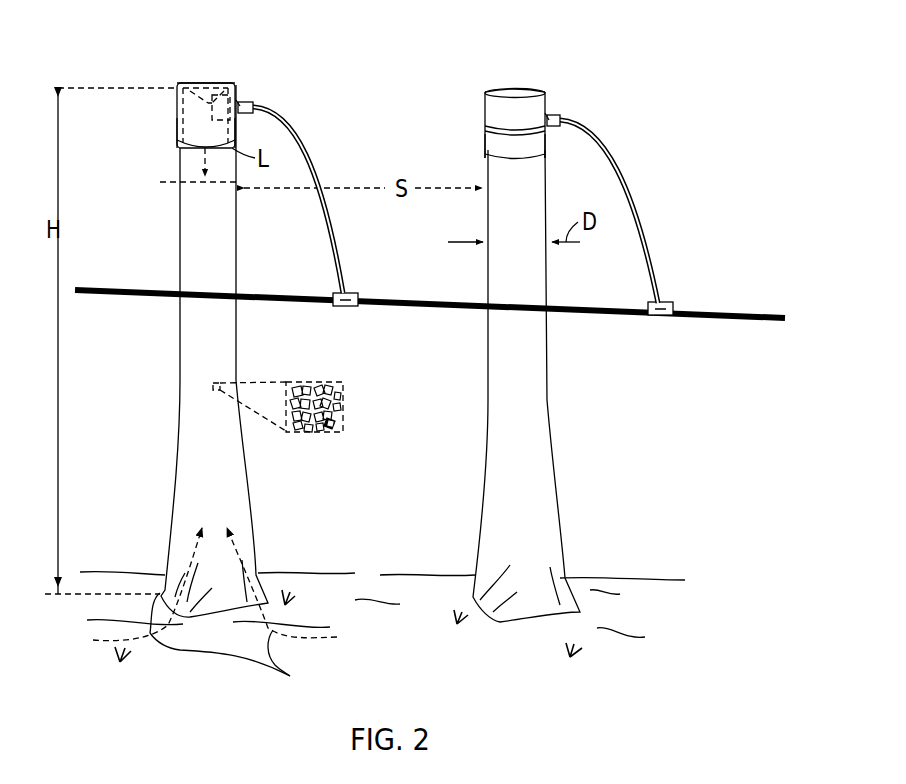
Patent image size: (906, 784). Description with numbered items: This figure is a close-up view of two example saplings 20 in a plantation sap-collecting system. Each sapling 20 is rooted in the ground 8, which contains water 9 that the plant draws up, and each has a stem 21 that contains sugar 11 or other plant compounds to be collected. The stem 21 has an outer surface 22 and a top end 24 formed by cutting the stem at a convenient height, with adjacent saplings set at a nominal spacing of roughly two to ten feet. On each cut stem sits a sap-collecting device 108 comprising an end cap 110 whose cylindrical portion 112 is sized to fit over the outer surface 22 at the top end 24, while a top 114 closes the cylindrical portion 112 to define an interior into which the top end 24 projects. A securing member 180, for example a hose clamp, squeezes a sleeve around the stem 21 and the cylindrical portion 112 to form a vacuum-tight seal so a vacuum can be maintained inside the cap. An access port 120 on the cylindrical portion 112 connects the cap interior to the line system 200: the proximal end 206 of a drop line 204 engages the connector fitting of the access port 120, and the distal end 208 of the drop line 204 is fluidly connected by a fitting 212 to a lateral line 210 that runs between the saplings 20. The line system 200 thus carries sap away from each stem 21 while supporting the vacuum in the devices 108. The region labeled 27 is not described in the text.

The ground 8 is at (627, 600).
The water 9 is at (228, 644).
The sugar 11 is at (316, 442).
The sapling 20 is at (351, 363).
The stem 21 is at (353, 363).
The outer surface 22 is at (230, 269).
The top end 24 is at (224, 94).
The chamber 27 is at (208, 95).
The sap-collecting device 108 is at (310, 88).
The end cap 110 is at (177, 108).
The cylindrical portion 112 is at (177, 136).
The top 114 is at (192, 84).
The access port 120 is at (244, 101).
The securing member 180 is at (485, 130).
The line system 200 is at (700, 246).
The drop line 204 is at (311, 156).
The proximal end 206 is at (256, 104).
The distal end 208 is at (348, 292).
The lateral line 210 is at (707, 308).
The fitting 212 is at (345, 307).